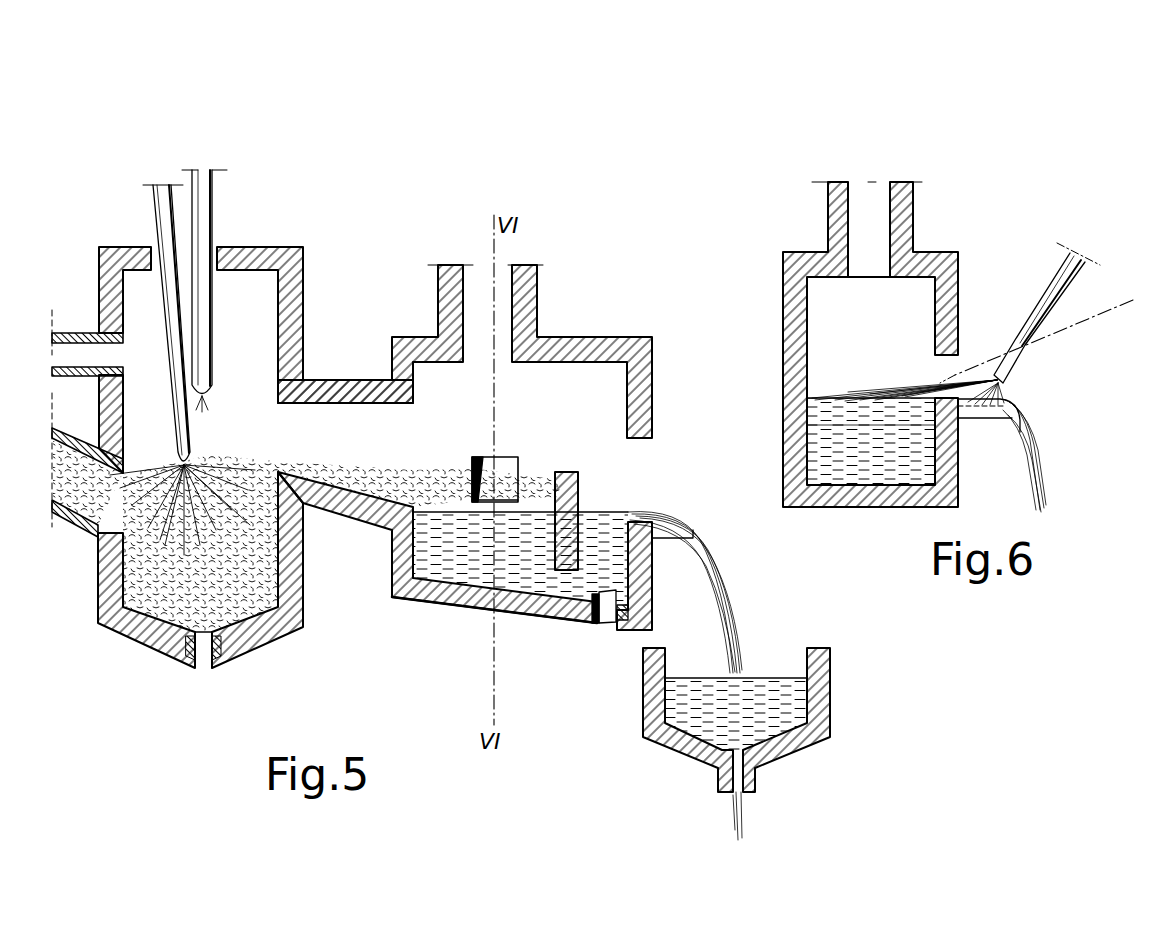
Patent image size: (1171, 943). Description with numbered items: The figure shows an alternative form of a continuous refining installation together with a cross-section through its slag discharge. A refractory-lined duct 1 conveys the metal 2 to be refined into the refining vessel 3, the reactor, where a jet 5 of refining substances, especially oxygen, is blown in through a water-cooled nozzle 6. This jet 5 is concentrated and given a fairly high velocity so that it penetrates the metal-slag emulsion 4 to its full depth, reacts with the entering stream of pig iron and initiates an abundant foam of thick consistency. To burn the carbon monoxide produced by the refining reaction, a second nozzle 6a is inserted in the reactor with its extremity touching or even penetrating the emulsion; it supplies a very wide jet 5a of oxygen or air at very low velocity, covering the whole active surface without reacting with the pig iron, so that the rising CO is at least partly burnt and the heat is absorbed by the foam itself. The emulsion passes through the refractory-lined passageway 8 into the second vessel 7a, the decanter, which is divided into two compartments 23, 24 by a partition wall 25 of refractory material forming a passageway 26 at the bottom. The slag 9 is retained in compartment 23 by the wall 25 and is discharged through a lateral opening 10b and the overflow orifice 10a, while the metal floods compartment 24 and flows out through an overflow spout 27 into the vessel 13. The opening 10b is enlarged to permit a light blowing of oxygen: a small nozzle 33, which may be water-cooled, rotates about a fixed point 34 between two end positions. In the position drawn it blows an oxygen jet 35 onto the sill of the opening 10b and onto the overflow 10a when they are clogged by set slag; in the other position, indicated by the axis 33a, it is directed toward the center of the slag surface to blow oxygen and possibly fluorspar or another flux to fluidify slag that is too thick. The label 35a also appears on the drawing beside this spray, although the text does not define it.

In FIG. 5, the refractory-lined duct 1 is at (67, 433).
In FIG. 5, the metal 2 is at (68, 500).
In FIG. 5, the refining vessel 3 is at (258, 306).
In FIG. 5, the metal-slag emulsion 4 is at (155, 615).
In FIG. 5, the jet of refining substances 5 is at (203, 418).
In FIG. 5, the wide jet 5a is at (165, 500).
In FIG. 5, the nozzle 6 is at (203, 197).
In FIG. 5, the second nozzle 6a is at (173, 237).
In FIG. 5, the second vessel 7a is at (613, 411).
In FIG. 6, the second vessel 7a is at (917, 280).
In FIG. 5, the refractory-lined passageway 8 is at (333, 417).
In FIG. 5, the slag 9 is at (430, 533).
In FIG. 6, the overflow orifice 10a is at (988, 420).
In FIG. 5, the lateral opening 10b is at (510, 457).
In FIG. 6, the lateral opening 10b is at (947, 372).
In FIG. 5, the vessel 13 is at (650, 695).
In FIG. 5, the first compartment 23 is at (472, 562).
In FIG. 5, the second compartment 24 is at (583, 613).
In FIG. 5, the partition wall 25 is at (578, 490).
In FIG. 5, the passageway 26 is at (543, 617).
In FIG. 5, the overflow spout 27 is at (663, 528).
In FIG. 6, the small nozzle 33 is at (1063, 283).
In FIG. 6, the axis 33a is at (1072, 322).
In FIG. 6, the fixed point 34 is at (1010, 352).
In FIG. 6, the oxygen jet 35 is at (1010, 388).
In FIG. 6, the spray jet 35a is at (905, 372).